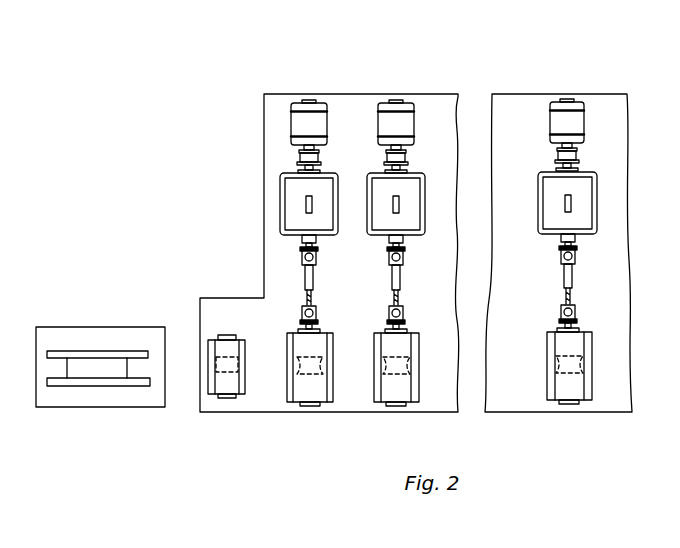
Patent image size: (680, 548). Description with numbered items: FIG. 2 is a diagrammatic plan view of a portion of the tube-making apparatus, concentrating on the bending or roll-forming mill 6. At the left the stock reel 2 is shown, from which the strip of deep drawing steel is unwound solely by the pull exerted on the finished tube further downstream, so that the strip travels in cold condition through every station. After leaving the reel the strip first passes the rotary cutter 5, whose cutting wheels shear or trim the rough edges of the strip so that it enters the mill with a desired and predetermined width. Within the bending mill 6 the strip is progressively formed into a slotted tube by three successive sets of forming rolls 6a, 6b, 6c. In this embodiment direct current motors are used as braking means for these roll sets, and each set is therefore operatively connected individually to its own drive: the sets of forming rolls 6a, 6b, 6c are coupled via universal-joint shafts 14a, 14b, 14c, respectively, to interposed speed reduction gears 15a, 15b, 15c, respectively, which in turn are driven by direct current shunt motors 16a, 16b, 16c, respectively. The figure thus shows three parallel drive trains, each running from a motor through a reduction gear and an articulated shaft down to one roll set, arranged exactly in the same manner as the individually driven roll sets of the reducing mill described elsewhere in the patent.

The stock reel 2 is at (92, 373).
The rotary cutter 5 is at (228, 385).
The bending or roll-forming mill 6 is at (451, 395).
The set of forming rolls 6a is at (305, 392).
The set of forming rolls 6b is at (397, 388).
The set of forming rolls 6c is at (576, 383).
The universal-joint shaft 14a is at (308, 273).
The universal-joint shaft 14b is at (397, 272).
The universal-joint shaft 14c is at (572, 273).
The speed reduction gear 15a is at (300, 188).
The speed reduction gear 15b is at (400, 185).
The speed reduction gear 15c is at (582, 190).
The direct current shunt motor 16a is at (297, 118).
The direct current shunt motor 16b is at (386, 118).
The direct current shunt motor 16c is at (566, 115).